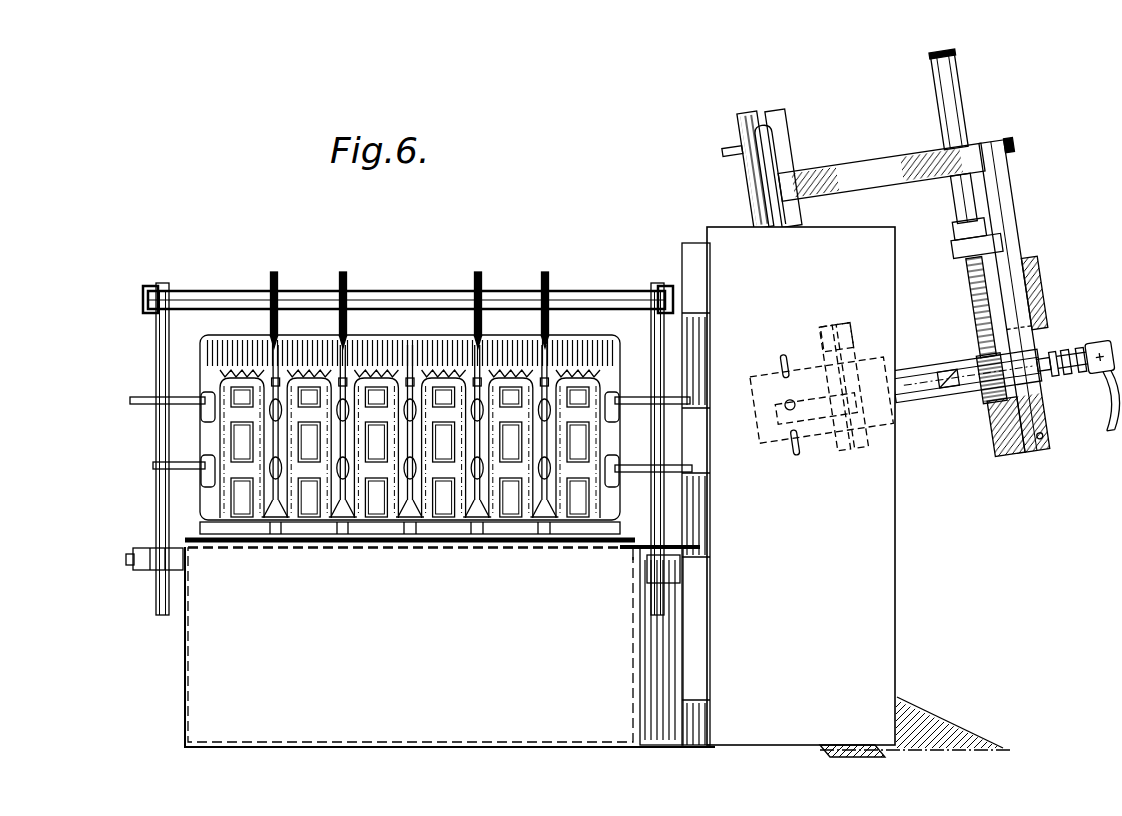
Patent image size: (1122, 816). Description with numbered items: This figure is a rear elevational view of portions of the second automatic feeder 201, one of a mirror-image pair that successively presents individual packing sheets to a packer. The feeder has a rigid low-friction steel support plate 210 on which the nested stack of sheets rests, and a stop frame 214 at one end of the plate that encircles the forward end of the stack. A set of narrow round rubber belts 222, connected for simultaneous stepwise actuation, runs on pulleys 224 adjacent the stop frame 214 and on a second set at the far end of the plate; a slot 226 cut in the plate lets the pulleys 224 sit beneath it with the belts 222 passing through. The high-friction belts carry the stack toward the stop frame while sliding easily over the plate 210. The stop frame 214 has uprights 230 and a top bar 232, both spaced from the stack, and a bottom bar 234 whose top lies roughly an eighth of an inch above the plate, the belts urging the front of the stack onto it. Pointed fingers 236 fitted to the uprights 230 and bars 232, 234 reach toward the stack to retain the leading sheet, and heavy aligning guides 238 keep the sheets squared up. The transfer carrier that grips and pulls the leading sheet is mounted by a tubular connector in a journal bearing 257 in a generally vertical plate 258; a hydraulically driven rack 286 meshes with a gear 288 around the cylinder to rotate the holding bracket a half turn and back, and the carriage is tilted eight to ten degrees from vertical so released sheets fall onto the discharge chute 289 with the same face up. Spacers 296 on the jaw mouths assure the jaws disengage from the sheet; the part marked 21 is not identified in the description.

The mold 21 is at (427, 427).
The automatic feeder 201 is at (917, 260).
The support plate 210 is at (570, 492).
The stop frame 214 is at (881, 172).
The belts 222 is at (425, 545).
The pulleys 224 is at (413, 567).
The slot 226 is at (605, 570).
The uprights 230 is at (385, 449).
The top bar 232 is at (408, 276).
The bottom bar 234 is at (410, 552).
The fingers 236 is at (418, 407).
The aligning guides 238 is at (411, 434).
The journal bearing 257 is at (1078, 389).
The plate 258 is at (1050, 290).
The rack 286 is at (980, 320).
The gear 288 is at (970, 399).
The discharge chute 289 is at (915, 715).
The spacers 296 is at (762, 437).